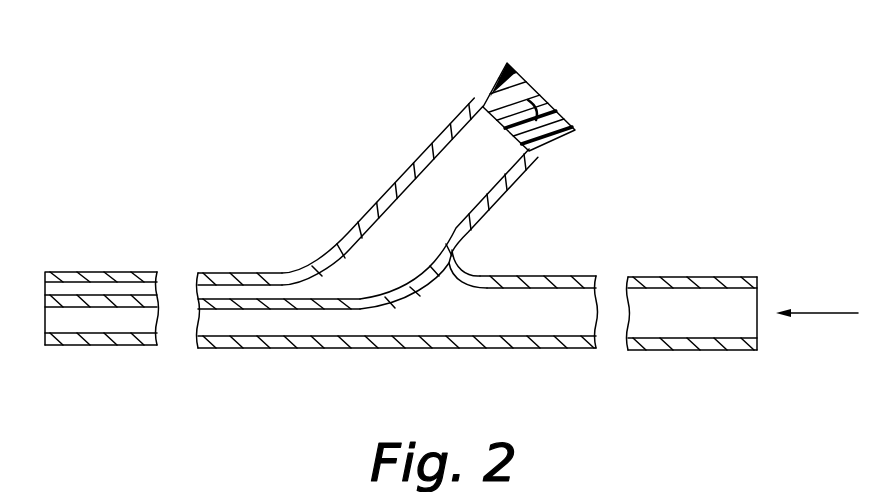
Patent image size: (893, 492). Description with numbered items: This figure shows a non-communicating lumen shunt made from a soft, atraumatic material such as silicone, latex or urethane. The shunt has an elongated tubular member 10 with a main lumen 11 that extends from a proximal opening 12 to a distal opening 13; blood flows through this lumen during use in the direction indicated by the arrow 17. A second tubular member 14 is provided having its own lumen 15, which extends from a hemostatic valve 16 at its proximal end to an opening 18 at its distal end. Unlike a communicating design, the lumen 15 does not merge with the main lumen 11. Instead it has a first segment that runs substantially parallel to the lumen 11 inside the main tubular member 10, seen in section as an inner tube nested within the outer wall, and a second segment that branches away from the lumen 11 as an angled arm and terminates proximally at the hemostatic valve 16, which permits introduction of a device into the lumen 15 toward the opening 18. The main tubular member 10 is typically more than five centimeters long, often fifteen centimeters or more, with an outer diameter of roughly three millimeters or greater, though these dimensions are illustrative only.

The elongated tubular member 10 is at (660, 278).
The lumen 11 is at (668, 337).
The proximal opening 12 is at (740, 302).
The distal opening 13 is at (53, 320).
The second tubular member 14 is at (386, 188).
The lumen 15 is at (480, 187).
The hemostatic valve 16 is at (523, 80).
The arrow 17 is at (812, 313).
The opening 18 is at (58, 291).